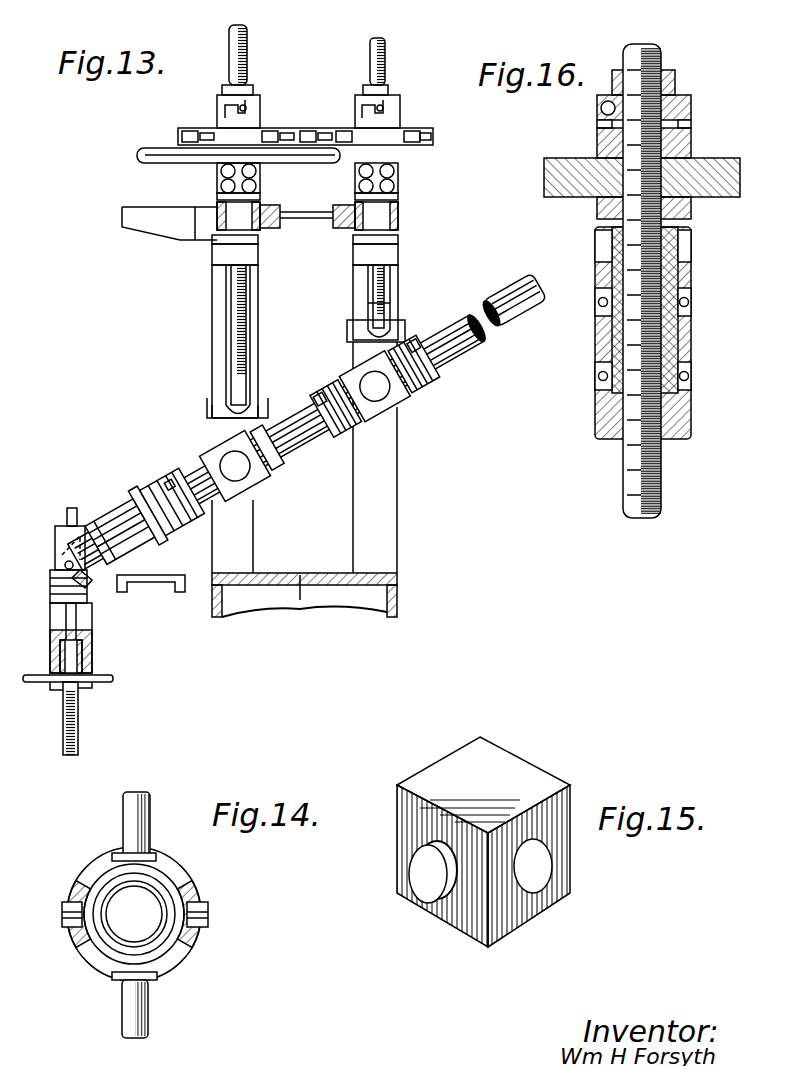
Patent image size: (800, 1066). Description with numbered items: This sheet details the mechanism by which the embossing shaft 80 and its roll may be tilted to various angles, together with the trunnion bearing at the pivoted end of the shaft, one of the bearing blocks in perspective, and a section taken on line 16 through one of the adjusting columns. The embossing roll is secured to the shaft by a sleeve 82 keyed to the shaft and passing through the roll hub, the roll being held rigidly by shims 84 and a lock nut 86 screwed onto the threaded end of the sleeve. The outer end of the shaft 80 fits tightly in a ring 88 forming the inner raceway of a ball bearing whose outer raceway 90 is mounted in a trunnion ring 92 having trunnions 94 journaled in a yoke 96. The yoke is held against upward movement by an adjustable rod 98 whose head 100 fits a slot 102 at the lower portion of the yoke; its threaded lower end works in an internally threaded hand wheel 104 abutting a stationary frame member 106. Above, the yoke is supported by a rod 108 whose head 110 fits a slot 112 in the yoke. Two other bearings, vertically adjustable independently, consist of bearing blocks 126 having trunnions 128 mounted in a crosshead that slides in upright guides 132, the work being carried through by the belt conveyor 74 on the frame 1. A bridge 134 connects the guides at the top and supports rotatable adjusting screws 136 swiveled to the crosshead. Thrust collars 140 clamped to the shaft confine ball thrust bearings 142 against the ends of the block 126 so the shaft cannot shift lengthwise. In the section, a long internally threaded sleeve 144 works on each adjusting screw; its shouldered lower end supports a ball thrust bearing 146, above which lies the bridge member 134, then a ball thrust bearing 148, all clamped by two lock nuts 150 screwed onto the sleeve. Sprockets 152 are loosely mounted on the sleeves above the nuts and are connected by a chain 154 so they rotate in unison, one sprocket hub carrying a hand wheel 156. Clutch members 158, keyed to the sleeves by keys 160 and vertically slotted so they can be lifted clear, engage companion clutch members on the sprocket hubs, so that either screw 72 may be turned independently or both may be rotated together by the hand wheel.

In FIG. 13, the base 1 is at (305, 552).
In FIG. 13, the section line 16 is at (388, 33).
In FIG. 13, the shaft 72 is at (118, 478).
In FIG. 13, the belt conveyor 74 is at (150, 585).
In FIG. 13, the shaft 80 is at (278, 475).
In FIG. 14, the shaft 80 is at (122, 900).
In FIG. 13, the sleeve 82 is at (180, 521).
In FIG. 13, the shims 84 is at (124, 492).
In FIG. 13, the lock nut 86 is at (91, 504).
In FIG. 14, the ring 88 is at (122, 958).
In FIG. 14, the outer raceway 90 is at (160, 880).
In FIG. 13, the trunnion ring 92 is at (55, 556).
In FIG. 14, the trunnion ring 92 is at (107, 955).
In FIG. 13, the trunnions 94 is at (88, 572).
In FIG. 14, the trunnions 94 is at (208, 915).
In FIG. 13, the yoke 96 is at (55, 536).
In FIG. 14, the yoke 96 is at (90, 862).
In FIG. 13, the adjustable rod 98 is at (60, 612).
In FIG. 14, the head 100 is at (165, 958).
In FIG. 14, the slot 102 is at (147, 1005).
In FIG. 13, the hand wheel 104 is at (100, 680).
In FIG. 13, the stationary frame member 106 is at (92, 658).
In FIG. 13, the rod 108 is at (67, 515).
In FIG. 14, the rod 108 is at (150, 810).
In FIG. 14, the head 110 is at (118, 855).
In FIG. 14, the slot 112 is at (145, 830).
In FIG. 13, the bearing blocks 126 is at (305, 425).
In FIG. 15, the bearing blocks 126 is at (495, 760).
In FIG. 13, the trunnions 128 is at (310, 434).
In FIG. 15, the trunnions 128 is at (428, 890).
In FIG. 13, the upright guides 132 is at (385, 487).
In FIG. 13, the bridge 134 is at (318, 215).
In FIG. 16, the bridge 134 is at (691, 325).
In FIG. 13, the adjusting screws 136 is at (247, 60).
In FIG. 16, the adjusting screws 136 is at (632, 470).
In FIG. 13, the thrust collars 140 is at (374, 389).
In FIG. 13, the ball thrust bearings 142 is at (402, 430).
In FIG. 13, the sleeve 144 is at (212, 250).
In FIG. 16, the sleeve 144 is at (600, 385).
In FIG. 13, the ball thrust bearing 146 is at (280, 230).
In FIG. 16, the ball thrust bearing 146 is at (691, 370).
In FIG. 13, the ball thrust bearing 148 is at (217, 196).
In FIG. 16, the ball thrust bearing 148 is at (691, 306).
In FIG. 13, the lock nuts 150 is at (355, 185).
In FIG. 16, the lock nuts 150 is at (691, 245).
In FIG. 13, the sprockets 152 is at (178, 132).
In FIG. 16, the sprockets 152 is at (565, 195).
In FIG. 13, the chain 154 is at (305, 130).
In FIG. 13, the hand wheel 156 is at (182, 160).
In FIG. 13, the clutch members 158 is at (217, 105).
In FIG. 16, the clutch members 158 is at (644, 114).
In FIG. 13, the keys 160 is at (256, 96).
In FIG. 16, the keys 160 is at (604, 104).